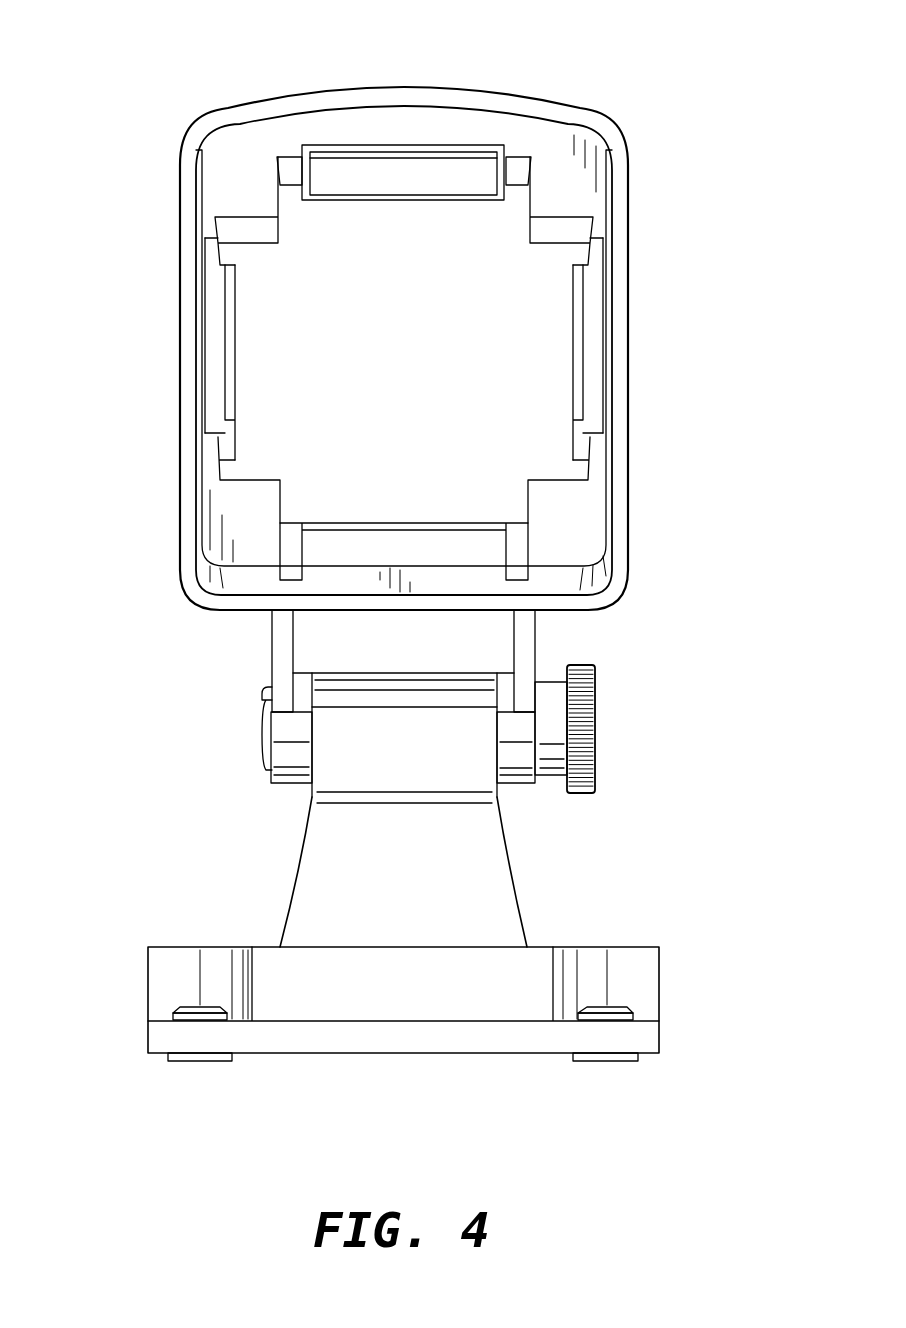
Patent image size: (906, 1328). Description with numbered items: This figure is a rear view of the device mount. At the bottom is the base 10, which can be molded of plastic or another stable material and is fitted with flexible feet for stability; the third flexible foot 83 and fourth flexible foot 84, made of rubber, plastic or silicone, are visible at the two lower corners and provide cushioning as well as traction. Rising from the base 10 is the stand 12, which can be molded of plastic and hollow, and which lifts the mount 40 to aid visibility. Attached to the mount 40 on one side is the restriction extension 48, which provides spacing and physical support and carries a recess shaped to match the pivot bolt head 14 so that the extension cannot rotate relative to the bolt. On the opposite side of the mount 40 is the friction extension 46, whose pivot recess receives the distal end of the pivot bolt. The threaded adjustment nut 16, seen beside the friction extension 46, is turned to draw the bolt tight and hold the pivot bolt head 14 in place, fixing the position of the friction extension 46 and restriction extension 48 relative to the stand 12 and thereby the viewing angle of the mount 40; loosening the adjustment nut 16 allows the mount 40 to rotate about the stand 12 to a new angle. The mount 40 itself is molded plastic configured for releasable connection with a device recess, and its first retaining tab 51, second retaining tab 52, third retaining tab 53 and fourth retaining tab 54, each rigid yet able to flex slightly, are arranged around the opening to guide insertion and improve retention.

The base 10 is at (435, 1020).
The stand 12 is at (488, 855).
The pivot bolt head 14 is at (268, 732).
The adjustment nut 16 is at (588, 723).
The mount 40 is at (555, 145).
The friction extension 46 is at (535, 623).
The restriction extension 48 is at (280, 643).
The first retaining tab 51 is at (435, 183).
The second retaining tab 52 is at (228, 360).
The third retaining tab 53 is at (435, 543).
The fourth retaining tab 54 is at (578, 342).
The third flexible foot 83 is at (192, 1005).
The fourth flexible foot 84 is at (607, 1005).